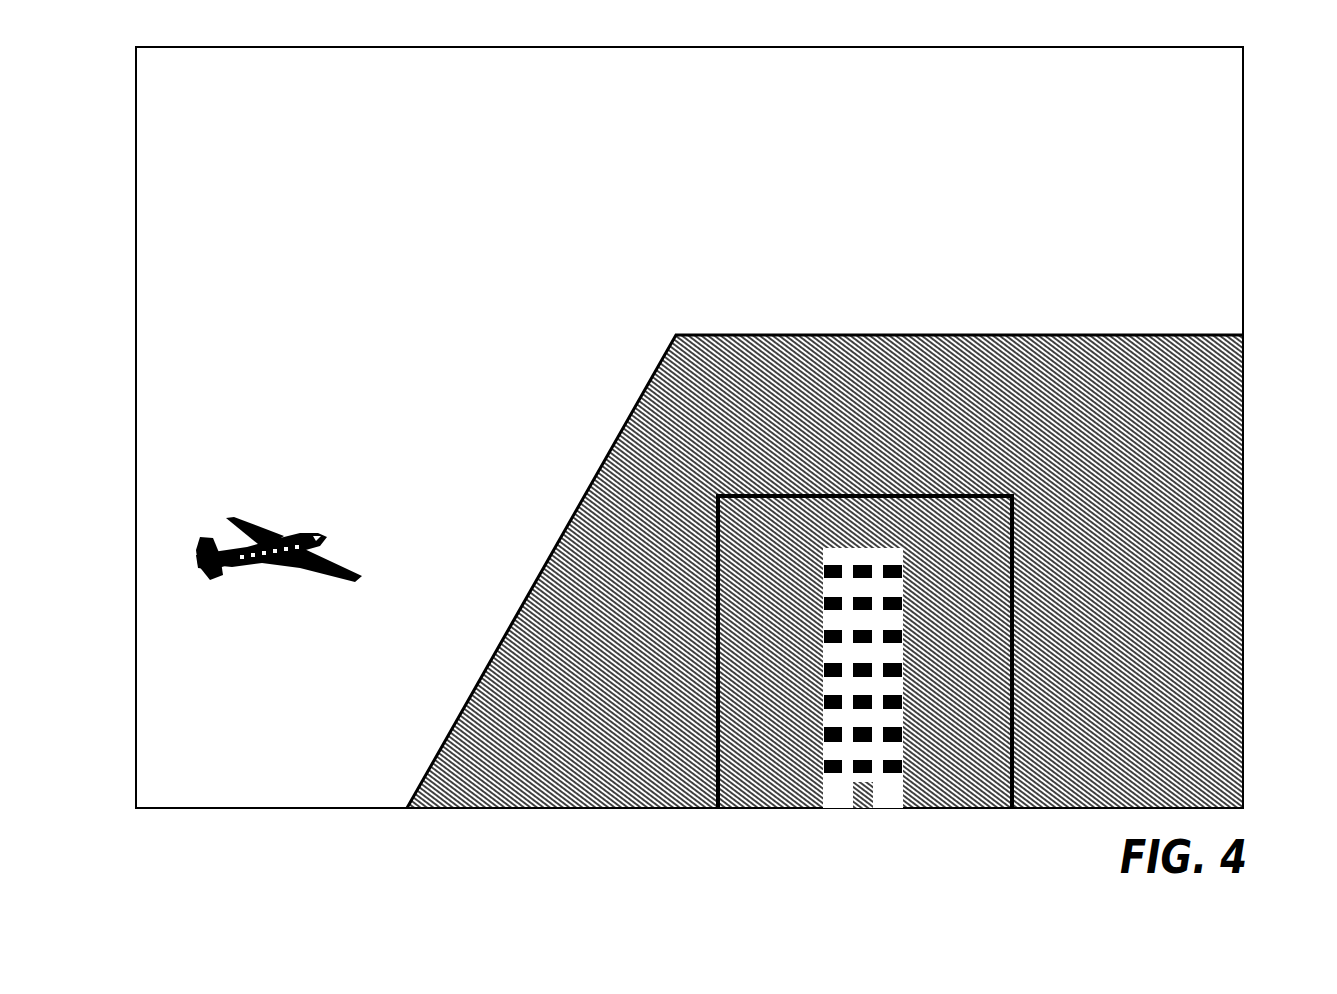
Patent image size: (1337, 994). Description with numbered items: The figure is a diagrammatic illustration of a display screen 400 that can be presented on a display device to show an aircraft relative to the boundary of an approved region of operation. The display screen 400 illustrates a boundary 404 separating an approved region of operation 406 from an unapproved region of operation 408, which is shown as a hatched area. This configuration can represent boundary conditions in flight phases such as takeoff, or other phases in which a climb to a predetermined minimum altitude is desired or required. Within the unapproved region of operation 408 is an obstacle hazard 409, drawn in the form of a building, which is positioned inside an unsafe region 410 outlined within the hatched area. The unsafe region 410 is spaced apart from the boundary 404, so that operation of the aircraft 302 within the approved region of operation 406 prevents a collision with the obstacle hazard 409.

The display screen 400 is at (1242, 172).
The approved region of operation 406 is at (1190, 257).
The boundary 404 is at (710, 335).
The unapproved region of operation 408 is at (1160, 498).
The unsafe region 410 is at (717, 760).
The obstacle hazard 409 is at (823, 773).
The aircraft 302 is at (287, 530).